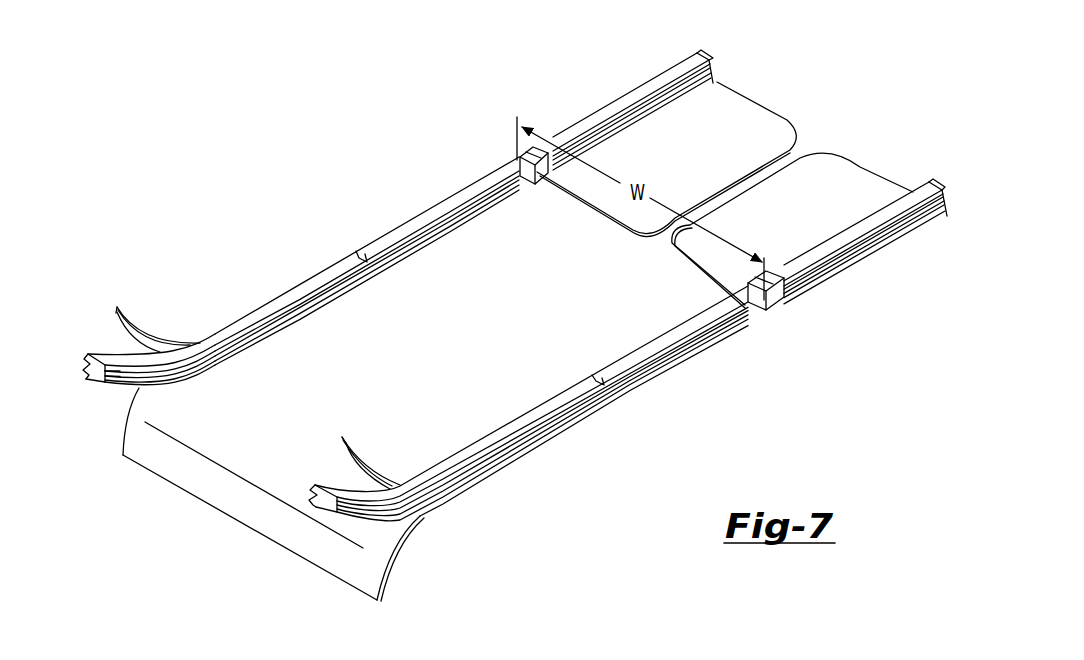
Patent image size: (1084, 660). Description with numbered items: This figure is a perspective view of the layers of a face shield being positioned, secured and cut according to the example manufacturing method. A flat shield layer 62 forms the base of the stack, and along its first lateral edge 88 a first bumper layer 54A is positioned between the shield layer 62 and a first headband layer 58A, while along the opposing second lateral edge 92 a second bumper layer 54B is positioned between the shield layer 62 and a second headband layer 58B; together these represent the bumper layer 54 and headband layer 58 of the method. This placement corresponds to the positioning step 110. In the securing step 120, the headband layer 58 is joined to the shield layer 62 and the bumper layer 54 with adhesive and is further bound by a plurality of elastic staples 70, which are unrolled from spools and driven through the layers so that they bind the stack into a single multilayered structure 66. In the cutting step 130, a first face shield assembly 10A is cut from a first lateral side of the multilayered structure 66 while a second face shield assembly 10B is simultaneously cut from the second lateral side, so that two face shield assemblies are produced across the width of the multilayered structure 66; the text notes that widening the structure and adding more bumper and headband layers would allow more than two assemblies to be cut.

The first face shield assembly 10A is at (725, 128).
The second face shield assembly 10B is at (833, 192).
The bumper layer 54 is at (87, 375).
The first bumper layer 54A is at (112, 380).
The second bumper layer 54B is at (348, 518).
The headband layer 58 is at (114, 312).
The first headband layer 58A is at (172, 348).
The second headband layer 58B is at (397, 481).
The shield layer 62 is at (245, 500).
The multilayered structure 66 is at (713, 370).
The elastic staples 70 is at (698, 52).
The first lateral edge 88 is at (117, 445).
The second lateral edge 92 is at (390, 558).
The positioning step 110 is at (240, 267).
The securing step 120 is at (413, 163).
The cutting step 130 is at (603, 57).